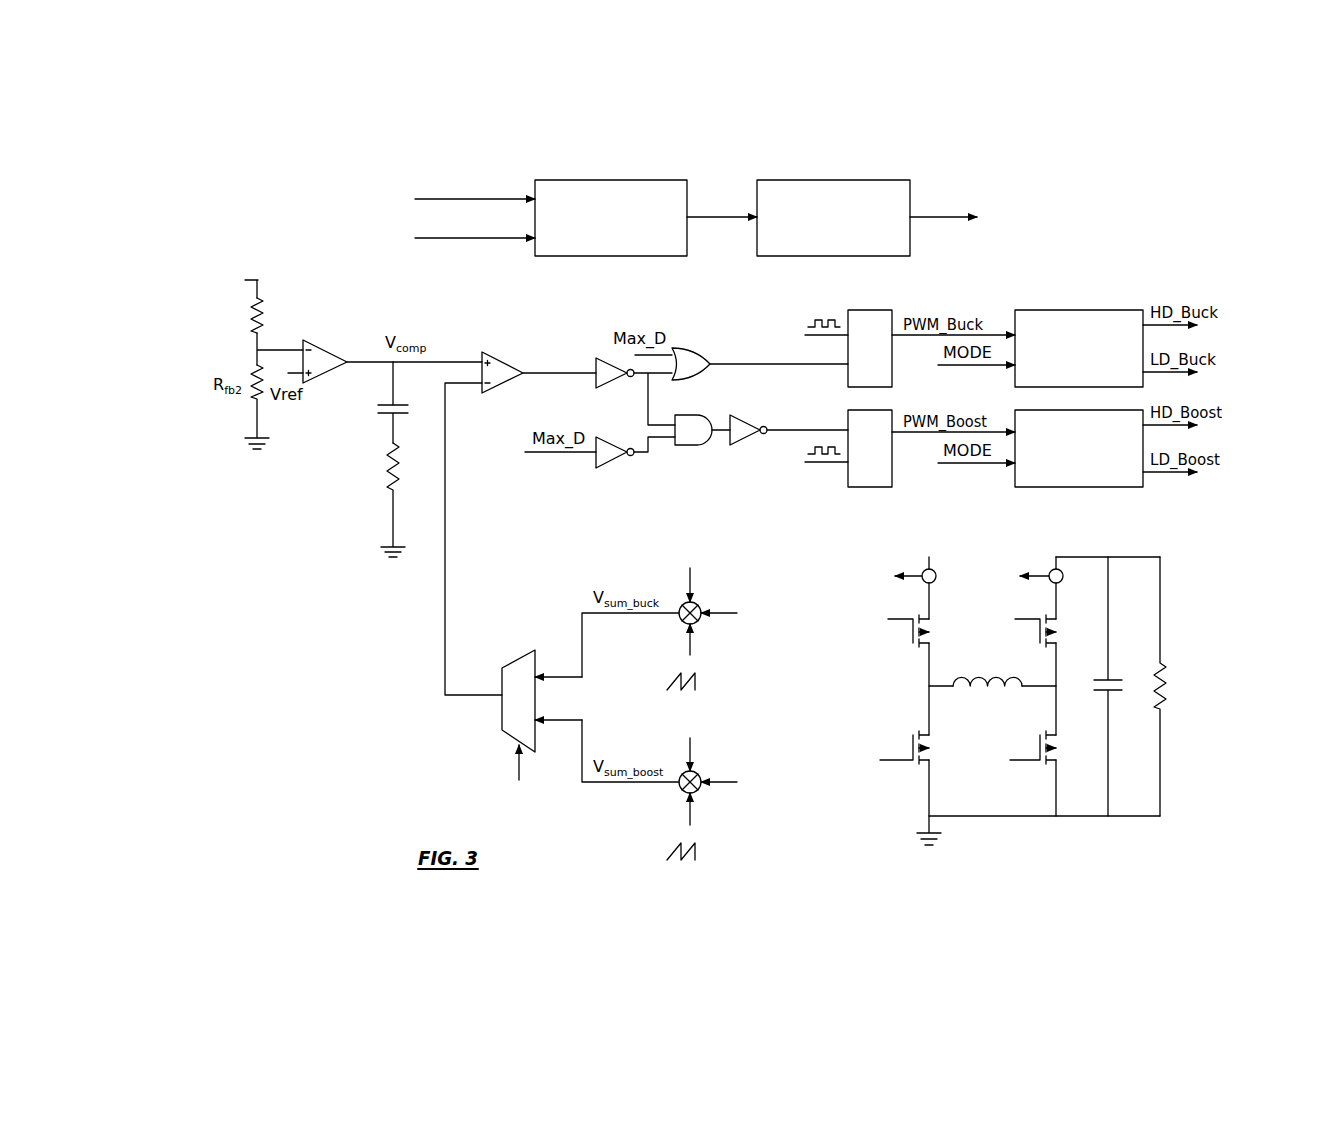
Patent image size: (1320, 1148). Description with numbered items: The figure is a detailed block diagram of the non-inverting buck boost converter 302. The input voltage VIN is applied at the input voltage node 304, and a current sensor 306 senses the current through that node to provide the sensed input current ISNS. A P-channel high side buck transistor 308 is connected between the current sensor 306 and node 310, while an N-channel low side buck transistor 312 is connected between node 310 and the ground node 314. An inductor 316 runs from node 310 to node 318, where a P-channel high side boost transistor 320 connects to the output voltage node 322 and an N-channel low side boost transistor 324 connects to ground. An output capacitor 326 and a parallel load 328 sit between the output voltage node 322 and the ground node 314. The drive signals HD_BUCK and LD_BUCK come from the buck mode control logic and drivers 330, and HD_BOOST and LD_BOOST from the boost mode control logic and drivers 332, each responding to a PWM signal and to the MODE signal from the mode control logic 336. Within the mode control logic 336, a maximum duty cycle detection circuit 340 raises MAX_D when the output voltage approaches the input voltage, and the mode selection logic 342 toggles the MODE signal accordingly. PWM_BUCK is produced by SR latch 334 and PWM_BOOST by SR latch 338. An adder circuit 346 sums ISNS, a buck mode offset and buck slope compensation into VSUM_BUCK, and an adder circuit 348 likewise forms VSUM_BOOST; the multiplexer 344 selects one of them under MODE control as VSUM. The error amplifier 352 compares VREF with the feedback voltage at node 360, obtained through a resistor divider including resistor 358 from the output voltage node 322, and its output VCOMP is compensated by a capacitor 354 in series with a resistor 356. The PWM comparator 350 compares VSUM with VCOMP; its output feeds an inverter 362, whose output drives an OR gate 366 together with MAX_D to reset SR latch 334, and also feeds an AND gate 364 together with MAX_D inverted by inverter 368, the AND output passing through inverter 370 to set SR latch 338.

The buck boost converter 302 is at (1215, 633).
The input voltage node 304 is at (922, 571).
The current sensor 306 is at (937, 578).
The high side buck transistor 308 is at (932, 636).
The node 310 is at (929, 686).
The low side buck transistor 312 is at (932, 758).
The ground node 314 is at (1035, 816).
The inductor 316 is at (1000, 691).
The node 318 is at (1062, 688).
The high side boost transistor 320 is at (1060, 633).
The output voltage node 322 is at (245, 282).
The low side boost transistor 324 is at (1062, 745).
The output capacitor 326 is at (1115, 715).
The load 328 is at (1165, 701).
The buck mode control logic and drivers 330 is at (1075, 310).
The boost mode control logic and drivers 332 is at (1145, 483).
The SR latch 334 is at (870, 310).
The mode control logic 336 is at (704, 189).
The SR latch 338 is at (885, 410).
The maximum duty cycle detection circuit 340 is at (608, 180).
The mode selection logic 342 is at (832, 180).
The multiplexer 344 is at (508, 666).
The adder circuit 346 is at (682, 598).
The adder circuit 348 is at (697, 792).
The PWM comparator 350 is at (510, 386).
The error amplifier 352 is at (343, 360).
The capacitor 354 is at (410, 410).
The resistor 356 is at (390, 489).
The resistor 358 is at (258, 326).
The node 360 is at (250, 349).
The inverter 362 is at (603, 358).
The AND gate 364 is at (688, 447).
The OR gate 366 is at (700, 378).
The inverter 368 is at (612, 470).
The inverter 370 is at (752, 418).